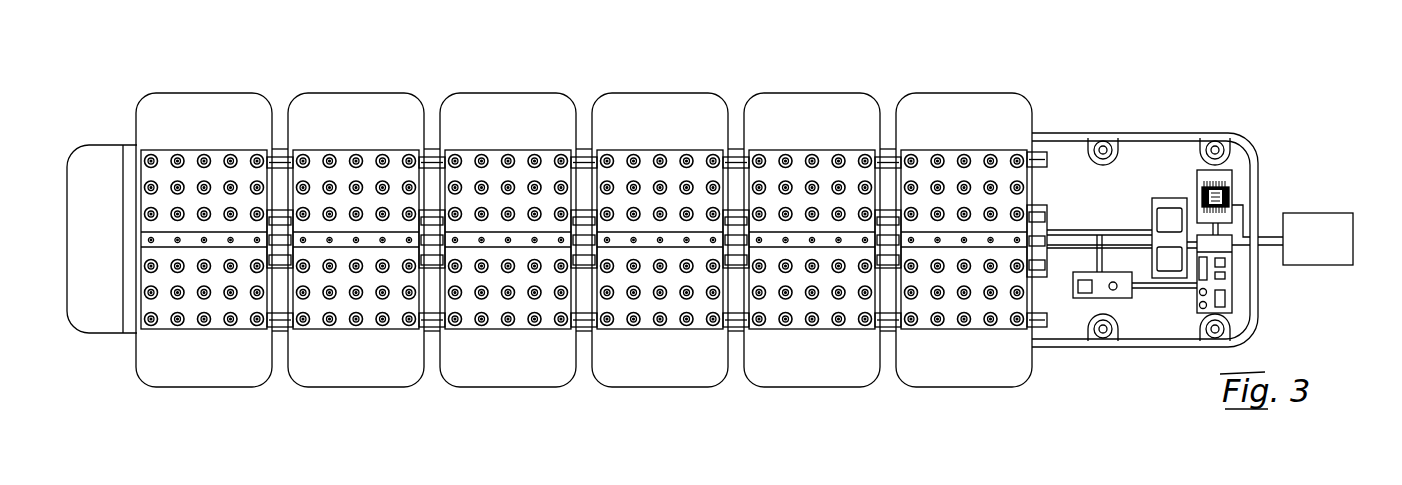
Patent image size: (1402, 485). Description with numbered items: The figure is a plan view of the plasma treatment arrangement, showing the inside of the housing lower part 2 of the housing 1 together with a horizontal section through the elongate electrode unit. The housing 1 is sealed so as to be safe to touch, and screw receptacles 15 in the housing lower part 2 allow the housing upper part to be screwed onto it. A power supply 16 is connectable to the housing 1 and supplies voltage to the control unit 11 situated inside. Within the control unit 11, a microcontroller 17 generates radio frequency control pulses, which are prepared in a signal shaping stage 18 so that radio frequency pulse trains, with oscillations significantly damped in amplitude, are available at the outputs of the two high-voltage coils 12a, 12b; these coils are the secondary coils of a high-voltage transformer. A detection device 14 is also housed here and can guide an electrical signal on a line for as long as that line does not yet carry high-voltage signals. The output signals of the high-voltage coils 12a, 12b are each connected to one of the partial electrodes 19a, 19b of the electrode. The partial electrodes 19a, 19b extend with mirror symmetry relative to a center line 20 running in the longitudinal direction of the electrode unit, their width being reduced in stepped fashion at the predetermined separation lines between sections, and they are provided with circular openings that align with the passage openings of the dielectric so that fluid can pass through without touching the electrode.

The housing 1 is at (1243, 118).
The housing lower part 2 is at (1213, 133).
The control unit 11 is at (1232, 190).
The high-voltage coil 12a is at (1168, 218).
The high-voltage coil 12b is at (1172, 260).
The detection device 14 is at (1120, 297).
The screw receptacles 15 is at (1105, 140).
The power supply 16 is at (1327, 265).
The microcontroller 17 is at (1232, 197).
The signal shaping stage 18 is at (1227, 285).
The partial electrode 19a is at (1035, 188).
The partial electrode 19b is at (1037, 288).
The center line 20 is at (947, 243).